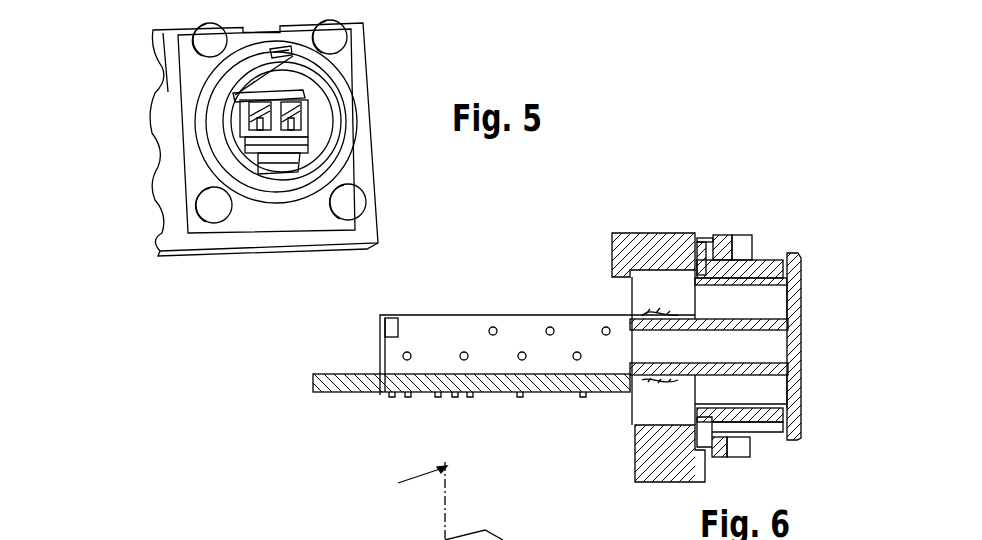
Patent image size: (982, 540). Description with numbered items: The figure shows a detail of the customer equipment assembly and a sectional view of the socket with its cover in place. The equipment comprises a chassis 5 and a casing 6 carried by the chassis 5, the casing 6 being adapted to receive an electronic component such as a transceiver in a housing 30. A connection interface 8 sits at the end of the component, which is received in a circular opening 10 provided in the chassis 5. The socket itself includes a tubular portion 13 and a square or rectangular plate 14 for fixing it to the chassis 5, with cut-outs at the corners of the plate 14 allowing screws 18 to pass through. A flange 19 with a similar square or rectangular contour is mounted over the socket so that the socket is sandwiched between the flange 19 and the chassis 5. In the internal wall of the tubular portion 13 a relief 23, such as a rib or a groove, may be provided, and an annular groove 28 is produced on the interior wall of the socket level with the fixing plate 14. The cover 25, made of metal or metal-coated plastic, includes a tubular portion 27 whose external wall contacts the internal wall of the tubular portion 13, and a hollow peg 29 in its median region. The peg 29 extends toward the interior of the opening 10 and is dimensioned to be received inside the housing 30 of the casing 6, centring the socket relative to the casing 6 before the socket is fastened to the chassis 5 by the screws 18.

In FIG. 5, the chassis 5 is at (162, 92).
In FIG. 6, the chassis 5 is at (652, 248).
In FIG. 6, the casing 6 is at (462, 315).
In FIG. 5, the connection interface 8 is at (305, 142).
In FIG. 5, the opening 10 is at (317, 115).
In FIG. 5, the tubular portion 13 is at (210, 122).
In FIG. 6, the tubular portion 13 is at (763, 263).
In FIG. 6, the plate 14 is at (446, 498).
In FIG. 5, the screws 18 is at (353, 200).
In FIG. 6, the screws 18 is at (740, 243).
In FIG. 6, the flange 19 is at (717, 447).
In FIG. 5, the relief 23 is at (292, 58).
In FIG. 6, the cover 25 is at (797, 350).
In FIG. 6, the tubular portion 27 is at (767, 282).
In FIG. 6, the annular groove 28 is at (703, 242).
In FIG. 6, the peg 29 is at (763, 370).
In FIG. 6, the housing 30 is at (523, 340).